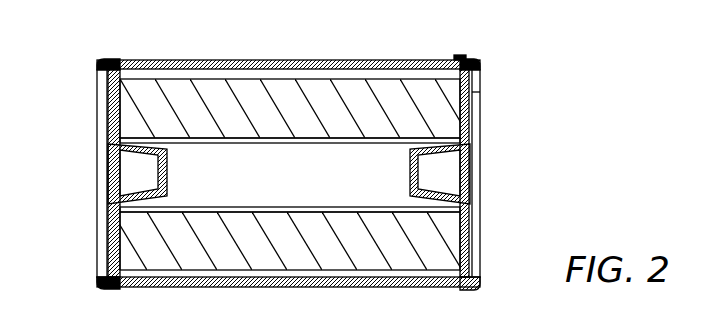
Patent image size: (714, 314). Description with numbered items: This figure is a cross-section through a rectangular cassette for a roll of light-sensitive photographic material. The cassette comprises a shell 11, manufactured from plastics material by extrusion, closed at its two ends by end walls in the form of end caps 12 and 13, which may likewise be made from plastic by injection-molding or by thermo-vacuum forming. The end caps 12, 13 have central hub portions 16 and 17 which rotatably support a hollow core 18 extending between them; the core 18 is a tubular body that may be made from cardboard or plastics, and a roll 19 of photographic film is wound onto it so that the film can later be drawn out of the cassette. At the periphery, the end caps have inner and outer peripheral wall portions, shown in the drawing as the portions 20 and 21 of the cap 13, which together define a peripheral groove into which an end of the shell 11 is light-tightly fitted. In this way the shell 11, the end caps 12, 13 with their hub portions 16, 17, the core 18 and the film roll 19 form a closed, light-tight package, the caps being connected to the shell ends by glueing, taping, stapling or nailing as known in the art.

The shell 11 is at (172, 62).
The end cap 12 is at (108, 104).
The end cap 13 is at (471, 115).
The central hub portion 16 is at (142, 159).
The central hub portion 17 is at (450, 149).
The hollow core 18 is at (256, 142).
The roll of photographic film 19 is at (378, 118).
The inner peripheral wall portion 20 is at (475, 79).
The outer peripheral wall portion 21 is at (460, 56).